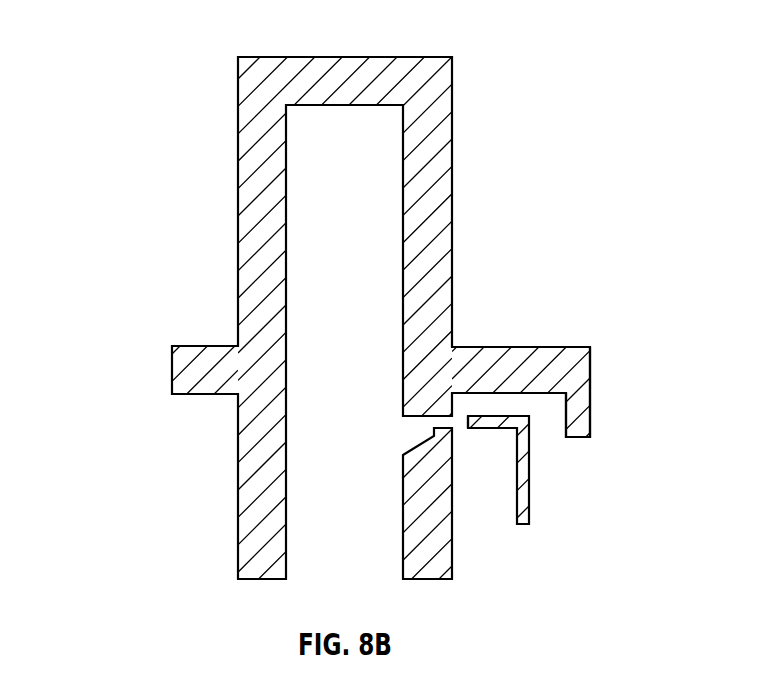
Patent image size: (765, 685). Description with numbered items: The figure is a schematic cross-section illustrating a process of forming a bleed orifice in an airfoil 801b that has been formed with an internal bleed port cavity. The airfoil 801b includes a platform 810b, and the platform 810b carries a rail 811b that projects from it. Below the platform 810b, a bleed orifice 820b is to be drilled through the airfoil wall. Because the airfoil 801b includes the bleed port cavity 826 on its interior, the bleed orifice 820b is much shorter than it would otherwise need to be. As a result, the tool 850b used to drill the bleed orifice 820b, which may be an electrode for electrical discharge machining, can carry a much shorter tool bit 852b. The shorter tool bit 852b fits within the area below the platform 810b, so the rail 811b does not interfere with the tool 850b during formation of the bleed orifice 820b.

The airfoil 801b is at (150, 27).
The platform 810b is at (518, 345).
The rail 811b is at (592, 369).
The bleed orifice 820b is at (443, 423).
The bleed port cavity 826 is at (400, 439).
The tool 850b is at (530, 477).
The tool bit 852b is at (505, 429).